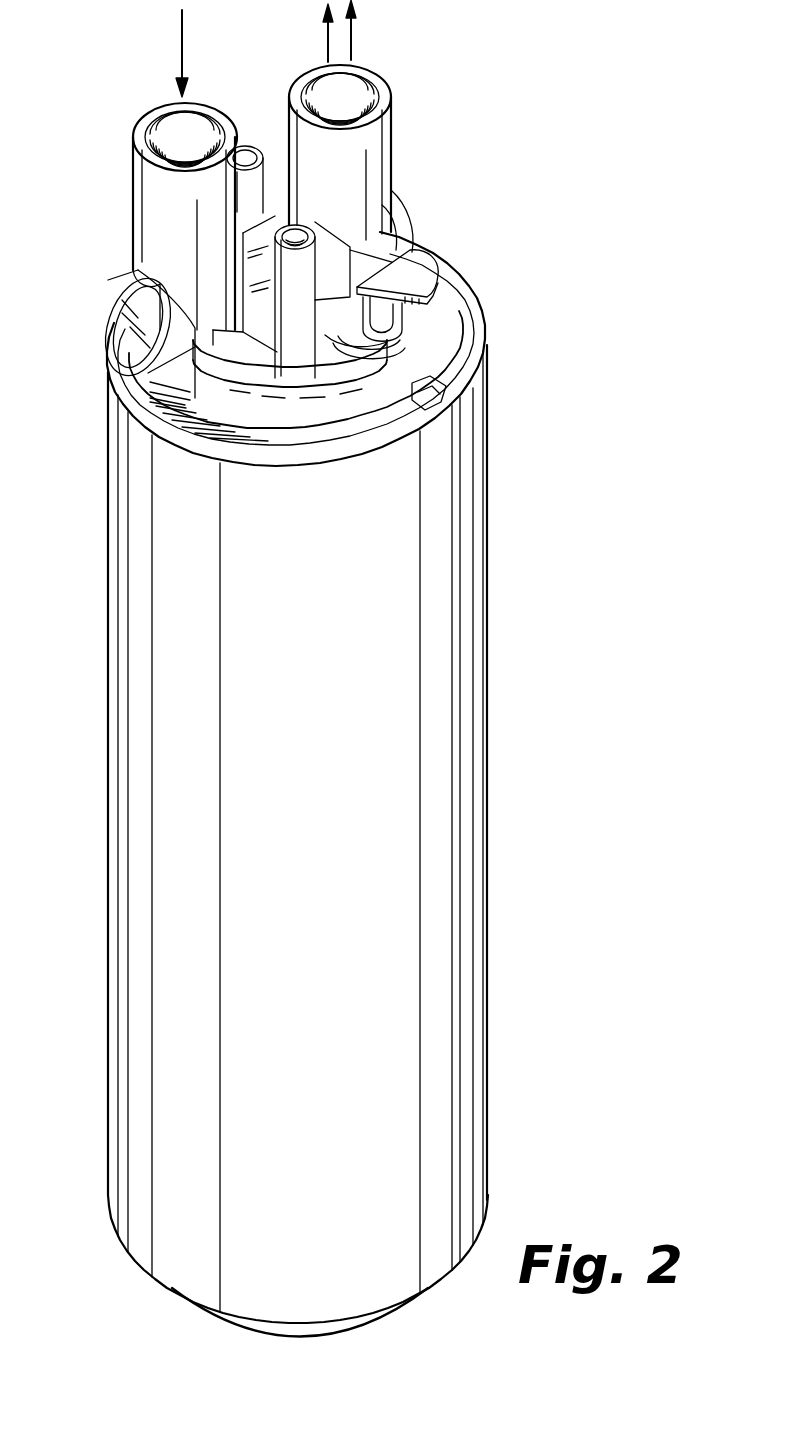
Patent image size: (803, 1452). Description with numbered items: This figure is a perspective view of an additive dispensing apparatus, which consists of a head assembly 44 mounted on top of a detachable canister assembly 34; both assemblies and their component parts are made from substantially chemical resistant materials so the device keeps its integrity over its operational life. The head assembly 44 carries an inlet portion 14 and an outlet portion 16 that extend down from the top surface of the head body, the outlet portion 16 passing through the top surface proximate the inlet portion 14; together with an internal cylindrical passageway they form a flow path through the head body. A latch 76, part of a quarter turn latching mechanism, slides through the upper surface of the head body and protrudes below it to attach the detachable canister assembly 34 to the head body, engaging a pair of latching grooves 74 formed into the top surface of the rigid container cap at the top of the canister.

The inlet portion 14 is at (152, 127).
The outlet portion 16 is at (370, 80).
The head assembly 44 is at (377, 163).
The latch 76 is at (417, 267).
The latching grooves 74 is at (458, 428).
The detachable canister assembly 34 is at (123, 712).